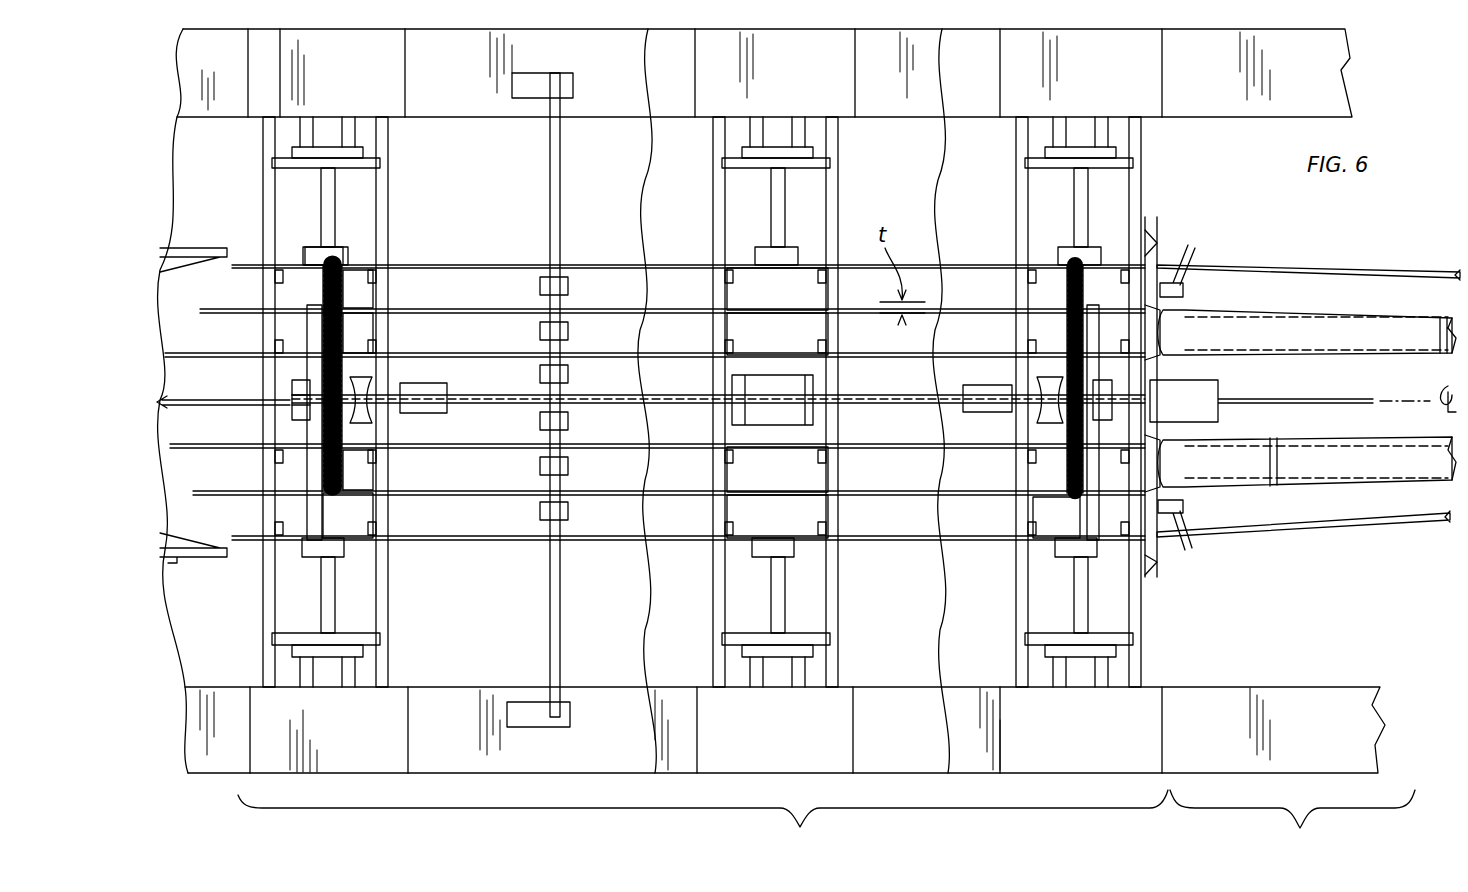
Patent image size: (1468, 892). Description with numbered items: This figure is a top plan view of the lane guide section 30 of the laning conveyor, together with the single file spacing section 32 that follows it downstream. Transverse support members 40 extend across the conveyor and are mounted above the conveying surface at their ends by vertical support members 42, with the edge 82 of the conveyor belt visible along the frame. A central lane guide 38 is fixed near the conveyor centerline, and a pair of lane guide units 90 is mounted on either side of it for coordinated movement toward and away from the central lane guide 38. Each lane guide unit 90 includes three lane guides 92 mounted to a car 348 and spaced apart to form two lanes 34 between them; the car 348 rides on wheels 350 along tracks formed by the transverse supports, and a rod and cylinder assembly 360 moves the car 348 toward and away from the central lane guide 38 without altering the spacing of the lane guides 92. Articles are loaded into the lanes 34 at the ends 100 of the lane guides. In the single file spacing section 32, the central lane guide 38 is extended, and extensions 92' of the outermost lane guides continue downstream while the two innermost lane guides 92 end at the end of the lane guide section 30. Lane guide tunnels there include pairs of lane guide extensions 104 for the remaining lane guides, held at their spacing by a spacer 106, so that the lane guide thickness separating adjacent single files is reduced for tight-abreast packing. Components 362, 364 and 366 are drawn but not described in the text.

The lane guide section 30 is at (805, 830).
The single file spacing section 32 is at (1300, 830).
The lanes 34 is at (613, 297).
The central lane guide 38 is at (242, 395).
The support members 40 is at (384, 180).
The vertical support members 42 is at (262, 60).
The edge of conveyor 82 is at (440, 115).
The lane guide units 90 is at (697, 400).
The lane guides 92 is at (454, 416).
The extensions of outermost lane guides 92' is at (1308, 401).
The ends of the lane guides 100 is at (191, 405).
The lane guide extensions 104 is at (1352, 348).
The spacer 106 is at (1420, 340).
The car 348 is at (358, 268).
The wheels 350 is at (268, 272).
The rod and cylinder assembly 360 is at (323, 130).
The rack block 362 is at (330, 290).
The coupling 364 is at (450, 393).
The hub 366 is at (292, 400).